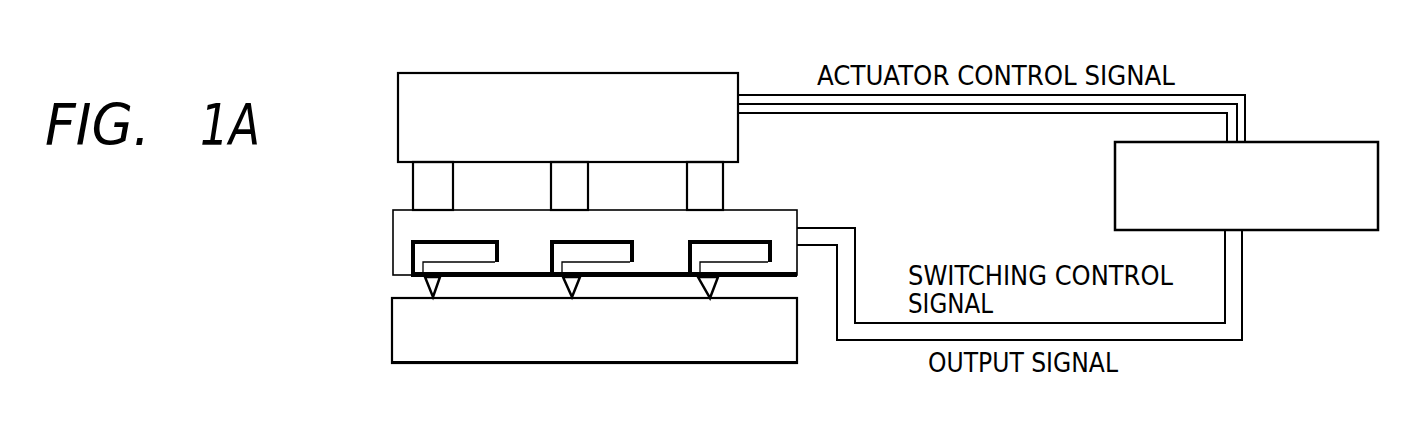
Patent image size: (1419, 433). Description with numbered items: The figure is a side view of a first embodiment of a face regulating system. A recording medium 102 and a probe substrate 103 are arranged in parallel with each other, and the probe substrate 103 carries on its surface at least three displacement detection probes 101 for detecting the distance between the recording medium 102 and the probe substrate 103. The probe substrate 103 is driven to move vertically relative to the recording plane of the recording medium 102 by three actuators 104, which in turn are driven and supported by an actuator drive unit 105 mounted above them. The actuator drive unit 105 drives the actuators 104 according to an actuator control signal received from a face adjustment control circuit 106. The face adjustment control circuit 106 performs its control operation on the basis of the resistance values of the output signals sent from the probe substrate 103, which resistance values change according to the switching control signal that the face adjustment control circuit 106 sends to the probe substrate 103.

The displacement detection probe 101 is at (560, 263).
The recording medium 102 is at (398, 348).
The probe substrate 103 is at (398, 228).
The actuator 104 is at (562, 188).
The actuator drive unit 105 is at (672, 73).
The face adjustment control circuit 106 is at (1320, 142).